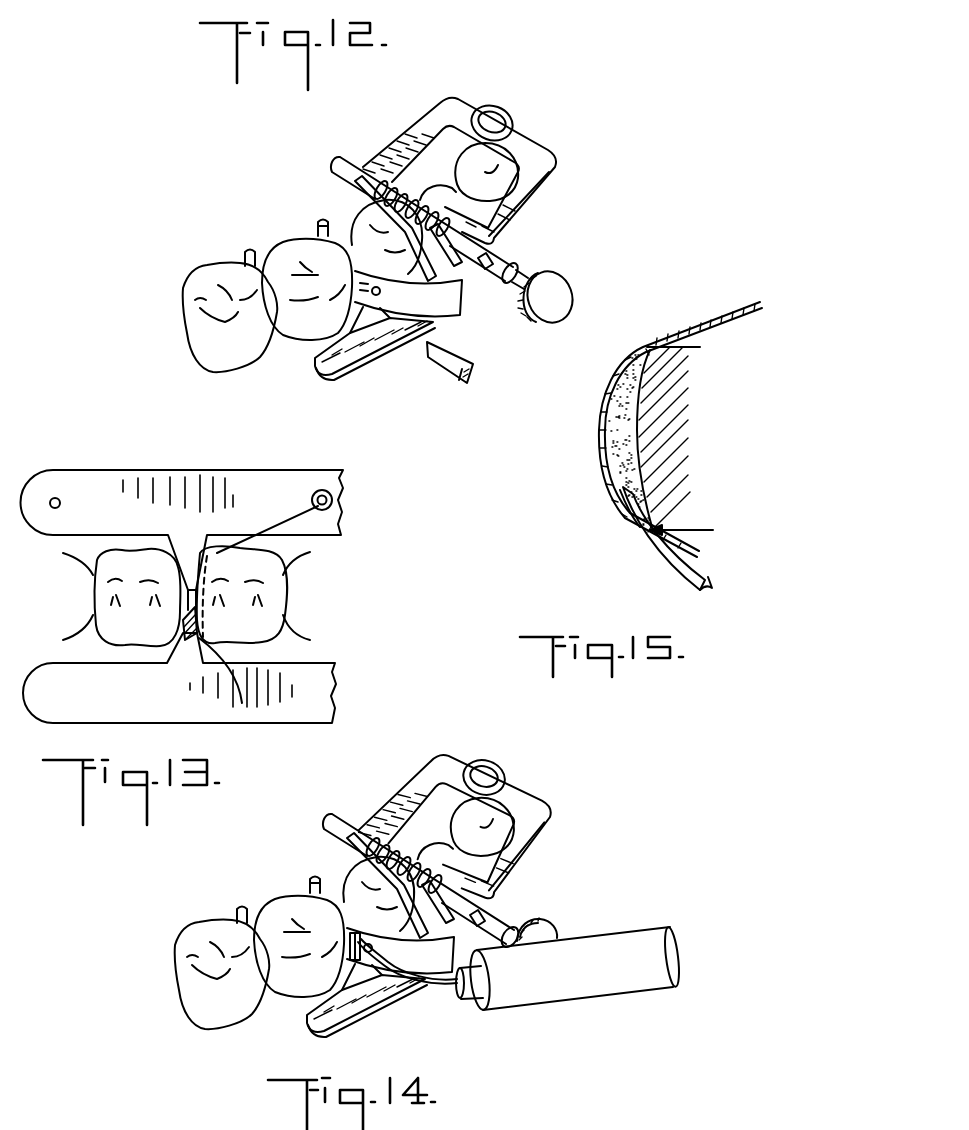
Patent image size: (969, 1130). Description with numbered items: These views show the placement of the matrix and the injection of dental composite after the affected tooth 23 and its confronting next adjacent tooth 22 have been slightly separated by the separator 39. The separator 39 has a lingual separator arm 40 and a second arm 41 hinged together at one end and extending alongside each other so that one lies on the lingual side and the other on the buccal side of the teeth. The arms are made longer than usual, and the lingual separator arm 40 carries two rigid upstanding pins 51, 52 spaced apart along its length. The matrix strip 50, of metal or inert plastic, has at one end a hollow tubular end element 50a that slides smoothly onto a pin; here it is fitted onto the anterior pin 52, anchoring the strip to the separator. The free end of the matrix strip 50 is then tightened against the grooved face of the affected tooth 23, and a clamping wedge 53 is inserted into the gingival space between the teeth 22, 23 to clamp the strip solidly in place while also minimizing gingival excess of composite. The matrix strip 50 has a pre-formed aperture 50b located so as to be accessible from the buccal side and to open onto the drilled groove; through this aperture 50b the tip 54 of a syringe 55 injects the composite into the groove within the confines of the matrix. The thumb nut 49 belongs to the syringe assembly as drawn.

In FIG. 13, the next adjacent tooth 22 is at (117, 637).
In FIG. 13, the affected tooth 23 is at (267, 618).
In FIG. 15, the affected tooth 23 is at (663, 426).
In FIG. 14, the separator 39 is at (565, 798).
In FIG. 12, the lingual separator arm 40 is at (420, 145).
In FIG. 13, the lingual separator arm 40 is at (117, 480).
In FIG. 12, the separator arm 41 is at (518, 214).
In FIG. 14, the thumb nut 49 is at (553, 934).
In FIG. 13, the matrix strip 50 is at (283, 522).
In FIG. 15, the matrix strip 50 is at (605, 477).
In FIG. 14, the matrix strip 50 is at (440, 882).
In FIG. 13, the tubular end element 50a is at (323, 490).
In FIG. 15, the aperture 50b is at (633, 523).
In FIG. 13, the pin 51 is at (57, 498).
In FIG. 12, the anterior pin 52 is at (320, 220).
In FIG. 12, the clamping wedge 53 is at (463, 382).
In FIG. 13, the clamping wedge 53 is at (187, 640).
In FIG. 15, the tip 54 is at (657, 553).
In FIG. 14, the tip 54 is at (388, 963).
In FIG. 14, the syringe 55 is at (567, 992).